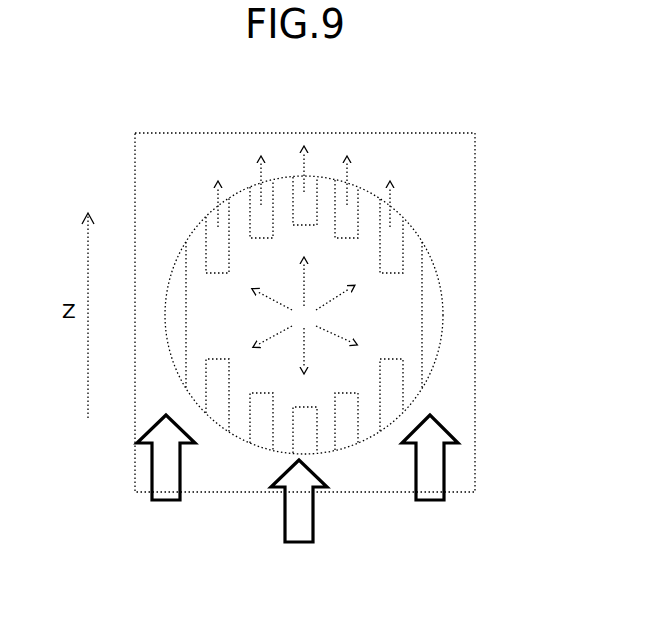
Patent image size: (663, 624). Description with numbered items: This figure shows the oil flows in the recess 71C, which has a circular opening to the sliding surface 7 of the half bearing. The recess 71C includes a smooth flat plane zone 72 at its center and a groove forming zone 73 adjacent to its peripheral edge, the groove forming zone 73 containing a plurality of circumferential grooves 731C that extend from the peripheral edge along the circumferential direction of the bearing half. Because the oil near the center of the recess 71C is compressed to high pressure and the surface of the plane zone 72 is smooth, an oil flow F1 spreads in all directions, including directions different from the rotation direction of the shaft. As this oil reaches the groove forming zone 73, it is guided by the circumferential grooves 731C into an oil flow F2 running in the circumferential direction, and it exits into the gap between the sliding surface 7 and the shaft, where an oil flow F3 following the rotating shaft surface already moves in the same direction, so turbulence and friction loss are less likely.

The sliding surface 7 is at (403, 147).
The recess 71C is at (284, 180).
The circumferential grooves 731C is at (212, 238).
The groove forming zone 73 is at (197, 267).
The plane zone 72 is at (355, 350).
The oil flow F1 is at (318, 306).
The oil flow F2 is at (395, 204).
The oil flow F3 is at (430, 467).